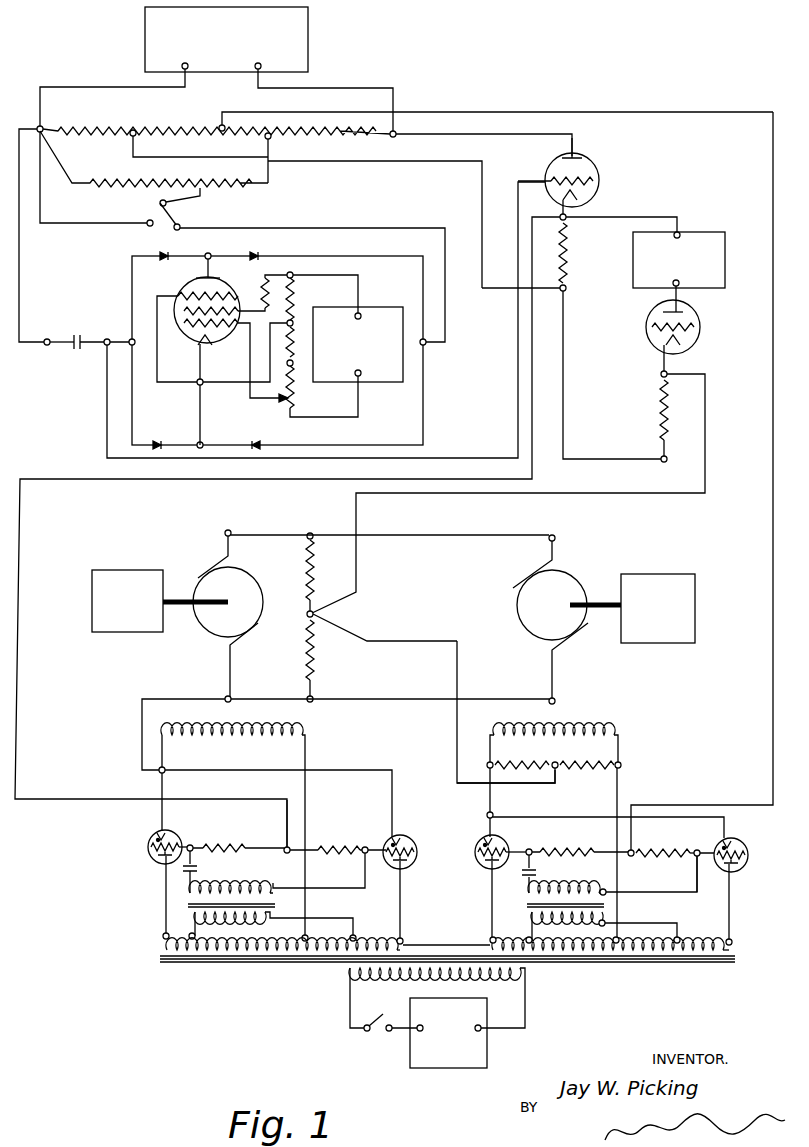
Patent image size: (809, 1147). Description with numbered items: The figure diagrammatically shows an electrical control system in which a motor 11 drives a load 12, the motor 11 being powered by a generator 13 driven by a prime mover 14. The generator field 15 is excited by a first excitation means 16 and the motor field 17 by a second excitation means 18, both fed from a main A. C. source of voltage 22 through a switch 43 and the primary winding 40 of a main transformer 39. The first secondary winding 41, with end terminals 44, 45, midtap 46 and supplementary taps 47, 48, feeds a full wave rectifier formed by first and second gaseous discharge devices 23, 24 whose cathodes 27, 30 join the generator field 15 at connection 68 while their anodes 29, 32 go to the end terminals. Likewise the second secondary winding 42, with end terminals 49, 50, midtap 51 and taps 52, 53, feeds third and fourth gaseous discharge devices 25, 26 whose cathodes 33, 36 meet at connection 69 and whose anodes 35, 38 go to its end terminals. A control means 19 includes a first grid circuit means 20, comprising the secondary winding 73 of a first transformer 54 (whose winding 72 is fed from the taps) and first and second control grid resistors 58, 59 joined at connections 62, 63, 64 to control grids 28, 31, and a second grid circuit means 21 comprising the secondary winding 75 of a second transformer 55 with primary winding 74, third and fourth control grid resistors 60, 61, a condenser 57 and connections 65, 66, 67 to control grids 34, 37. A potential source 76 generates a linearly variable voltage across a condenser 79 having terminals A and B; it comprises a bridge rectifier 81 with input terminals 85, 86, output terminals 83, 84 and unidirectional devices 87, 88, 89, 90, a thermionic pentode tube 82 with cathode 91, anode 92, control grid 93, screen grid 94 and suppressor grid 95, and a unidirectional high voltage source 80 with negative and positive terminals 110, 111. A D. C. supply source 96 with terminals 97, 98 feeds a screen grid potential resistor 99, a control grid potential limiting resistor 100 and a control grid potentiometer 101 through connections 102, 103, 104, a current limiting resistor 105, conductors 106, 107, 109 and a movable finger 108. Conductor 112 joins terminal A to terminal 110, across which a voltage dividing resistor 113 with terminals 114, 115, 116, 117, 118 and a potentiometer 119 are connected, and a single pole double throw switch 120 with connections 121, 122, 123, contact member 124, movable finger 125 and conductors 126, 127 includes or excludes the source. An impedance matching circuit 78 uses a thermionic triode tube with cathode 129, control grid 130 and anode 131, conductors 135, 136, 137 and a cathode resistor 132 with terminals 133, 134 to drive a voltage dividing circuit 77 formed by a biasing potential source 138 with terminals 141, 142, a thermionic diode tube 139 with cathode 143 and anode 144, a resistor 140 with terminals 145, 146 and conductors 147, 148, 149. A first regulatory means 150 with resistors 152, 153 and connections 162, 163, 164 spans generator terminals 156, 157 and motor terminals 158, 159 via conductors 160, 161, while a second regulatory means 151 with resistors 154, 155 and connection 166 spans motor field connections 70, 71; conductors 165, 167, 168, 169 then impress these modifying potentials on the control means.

The motor 11 is at (566, 571).
The load 12 is at (634, 572).
The generator 13 is at (247, 572).
The prime mover 14 is at (100, 570).
The generator field 15 is at (238, 730).
The first excitation means 16 is at (332, 843).
The motor field 17 is at (584, 733).
The second excitation means 18 is at (671, 857).
The control means 19 is at (410, 848).
The first grid circuit means 20 is at (260, 900).
The second grid circuit means 21 is at (565, 905).
The main alternating current source of voltage 22 is at (458, 1070).
The first gaseous discharge device 23 is at (150, 872).
The second gaseous discharge device 24 is at (410, 877).
The third gaseous discharge device 25 is at (489, 877).
The fourth gaseous discharge device 26 is at (742, 879).
The cathode 27 is at (163, 832).
The control grid 28 is at (148, 847).
The anode 29 is at (157, 858).
The cathode 30 is at (407, 843).
The control grid 31 is at (414, 853).
The anode 32 is at (401, 869).
The cathode 33 is at (494, 839).
The control grid 34 is at (476, 851).
The anode 35 is at (486, 865).
The cathode 36 is at (738, 845).
The control grid 37 is at (747, 856).
The anode 38 is at (738, 865).
The main transformer 39 is at (444, 975).
The primary winding 40 is at (404, 980).
The first secondary winding 41 is at (166, 950).
The second secondary winding 42 is at (730, 954).
The switch 43 is at (384, 1030).
The end terminal 44 is at (163, 936).
The end terminal 45 is at (404, 942).
The midtap 46 is at (305, 936).
The supplementary tap 47 is at (196, 934).
The supplementary tap 48 is at (354, 937).
The end terminal 49 is at (491, 938).
The end terminal 50 is at (731, 941).
The midtap 51 is at (624, 934).
The supplementary tap 52 is at (534, 939).
The supplementary tap 53 is at (679, 940).
The first transformer 54 is at (221, 894).
The second transformer 55 is at (596, 898).
The condenser 57 is at (534, 870).
The first control grid resistor 58 is at (217, 844).
The second control grid resistor 59 is at (328, 853).
The third control grid resistor 60 is at (557, 848).
The fourth control grid resistor 61 is at (668, 857).
The connection 62 is at (191, 845).
The connection 63 is at (285, 847).
The connection 64 is at (367, 854).
The connection 65 is at (530, 849).
The connection 66 is at (632, 857).
The connection 67 is at (696, 850).
The connection 68 is at (165, 772).
The connection 69 is at (487, 813).
The connection 70 is at (488, 763).
The connection 71 is at (621, 765).
The primary winding 72 is at (241, 918).
The secondary winding 73 is at (273, 888).
The primary winding 74 is at (594, 926).
The secondary winding 75 is at (596, 890).
The potential source 76 is at (264, 342).
The voltage dividing circuit 77 is at (664, 330).
The impedance matching circuit 78 is at (572, 176).
The condenser 79 is at (88, 331).
The unidirectional high voltage source 80 is at (226, 39).
The bridge rectifier 81 is at (291, 342).
The thermionic pentode tube 82 is at (219, 329).
The first output terminal 83 is at (209, 256).
The second output terminal 84 is at (198, 444).
The first input terminal 85 is at (141, 333).
The second input terminal 86 is at (426, 346).
The first unidirectional current passing device 87 is at (168, 256).
The second unidirectional current passing device 88 is at (257, 256).
The third unidirectional current passing device 89 is at (162, 442).
The fourth unidirectional current passing device 90 is at (252, 442).
The cathode 91 is at (210, 346).
The anode 92 is at (218, 278).
The control grid 93 is at (190, 328).
The screen grid 94 is at (182, 316).
The suppressor grid 95 is at (230, 295).
The D. C. supply source 96 is at (358, 344).
The positive terminal 97 is at (358, 310).
The negative terminal 98 is at (358, 378).
The screen grid potential resistor 99 is at (295, 288).
The control grid potential limiting resistor 100 is at (303, 342).
The control grid potentiometer 101 is at (297, 402).
The connection 102 is at (291, 275).
The connection 103 is at (304, 316).
The connection 104 is at (295, 368).
The current limiting resistor 105 is at (275, 283).
The conductor 106 is at (226, 388).
The conductor 107 is at (250, 352).
The movable finger 108 is at (270, 400).
The conductor 109 is at (157, 314).
The negative terminal 110 is at (192, 63).
The positive terminal 111 is at (312, 91).
The conductor 112 is at (40, 100).
The voltage dividing resistor 113 is at (89, 124).
The end terminal 114 is at (42, 126).
The end terminal 115 is at (397, 132).
The mid-terminal 116 is at (136, 137).
The terminal 117 is at (221, 123).
The terminal 118 is at (271, 138).
The potentiometer 119 is at (140, 173).
The single pole double throw switch 120 is at (182, 214).
The first connection 121 is at (148, 222).
The second connection 122 is at (178, 202).
The common connection 123 is at (186, 223).
The contact member 124 is at (165, 210).
The movable finger 125 is at (204, 192).
The conductor 126 is at (46, 209).
The conductor 127 is at (322, 228).
The cathode 129 is at (589, 195).
The control grid 130 is at (594, 179).
The anode 131 is at (579, 155).
The cathode resistor 132 is at (569, 256).
The upper terminal 133 is at (566, 220).
The lower terminal 134 is at (566, 290).
The conductor 135 is at (358, 168).
The conductor 136 is at (520, 218).
The conductor 137 is at (466, 138).
The biasing potential source 138 is at (727, 250).
The thermionic diode tube 139 is at (684, 310).
The resistor 140 is at (668, 402).
The positive terminal 141 is at (680, 234).
The negative terminal 142 is at (672, 286).
The cathode 143 is at (688, 341).
The anode 144 is at (694, 323).
The upper terminal 145 is at (659, 376).
The lower terminal 146 is at (668, 462).
The conductor 147 is at (641, 217).
The conductor 148 is at (563, 384).
The conductor 149 is at (679, 290).
The first regulatory means 150 is at (390, 613).
The second regulatory means 151 is at (536, 785).
The resistor 152 is at (310, 558).
The resistor 153 is at (315, 658).
The resistor 154 is at (515, 775).
The resistor 155 is at (600, 769).
The negative terminal 156 is at (226, 532).
The positive terminal 157 is at (226, 698).
The negative terminal 158 is at (555, 536).
The positive terminal 159 is at (555, 701).
The conductor 160 is at (404, 533).
The conductor 161 is at (400, 702).
The connection 162 is at (313, 613).
The connection 163 is at (308, 535).
The connection 164 is at (310, 702).
The conductor 165 is at (709, 448).
The connection 166 is at (557, 769).
The conductor 167 is at (457, 680).
The conductor 168 is at (773, 590).
The conductor 169 is at (17, 527).
The first terminal A is at (55, 333).
The second terminal B is at (324, 320).